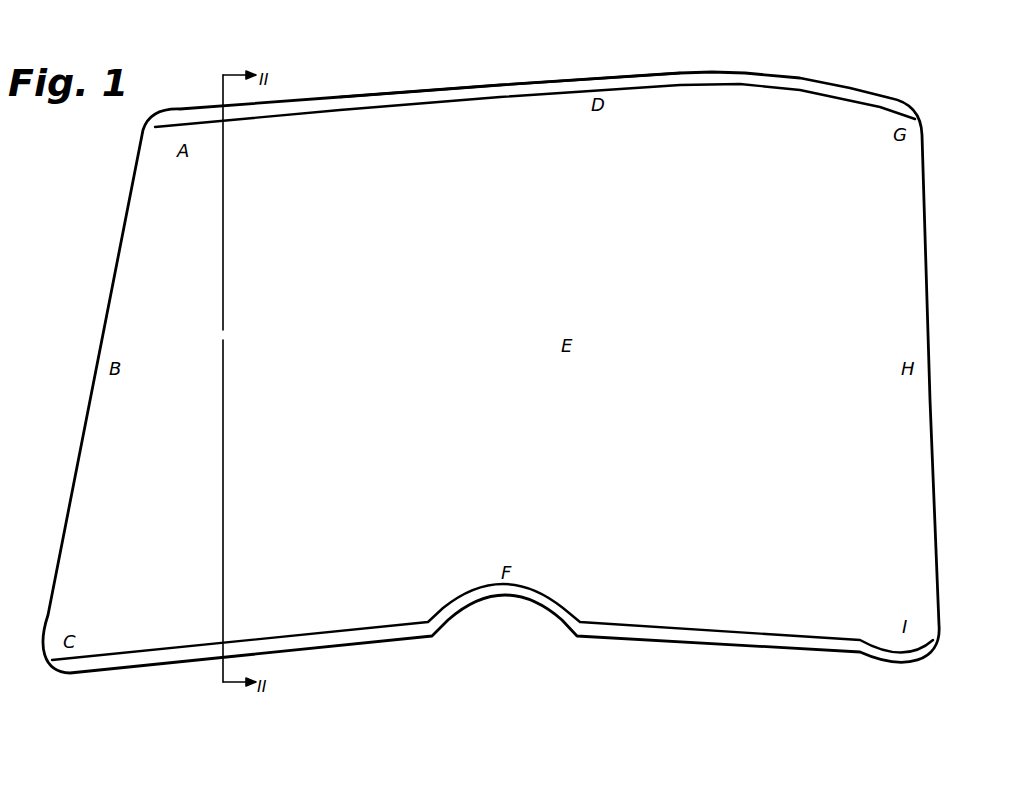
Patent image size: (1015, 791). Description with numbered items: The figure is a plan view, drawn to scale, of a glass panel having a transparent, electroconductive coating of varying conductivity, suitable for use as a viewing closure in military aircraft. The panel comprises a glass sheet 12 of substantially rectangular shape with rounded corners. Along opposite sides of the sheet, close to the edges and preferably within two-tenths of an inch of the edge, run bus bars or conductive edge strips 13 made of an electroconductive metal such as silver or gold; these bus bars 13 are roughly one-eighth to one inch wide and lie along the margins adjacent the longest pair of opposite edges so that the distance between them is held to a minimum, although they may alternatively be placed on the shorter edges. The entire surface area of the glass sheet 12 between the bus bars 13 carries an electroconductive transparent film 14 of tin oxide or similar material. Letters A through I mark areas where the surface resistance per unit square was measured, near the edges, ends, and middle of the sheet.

The glass sheet 12 is at (928, 250).
The bus bars 13 is at (738, 82).
The electroconductive transparent film 14 is at (470, 117).